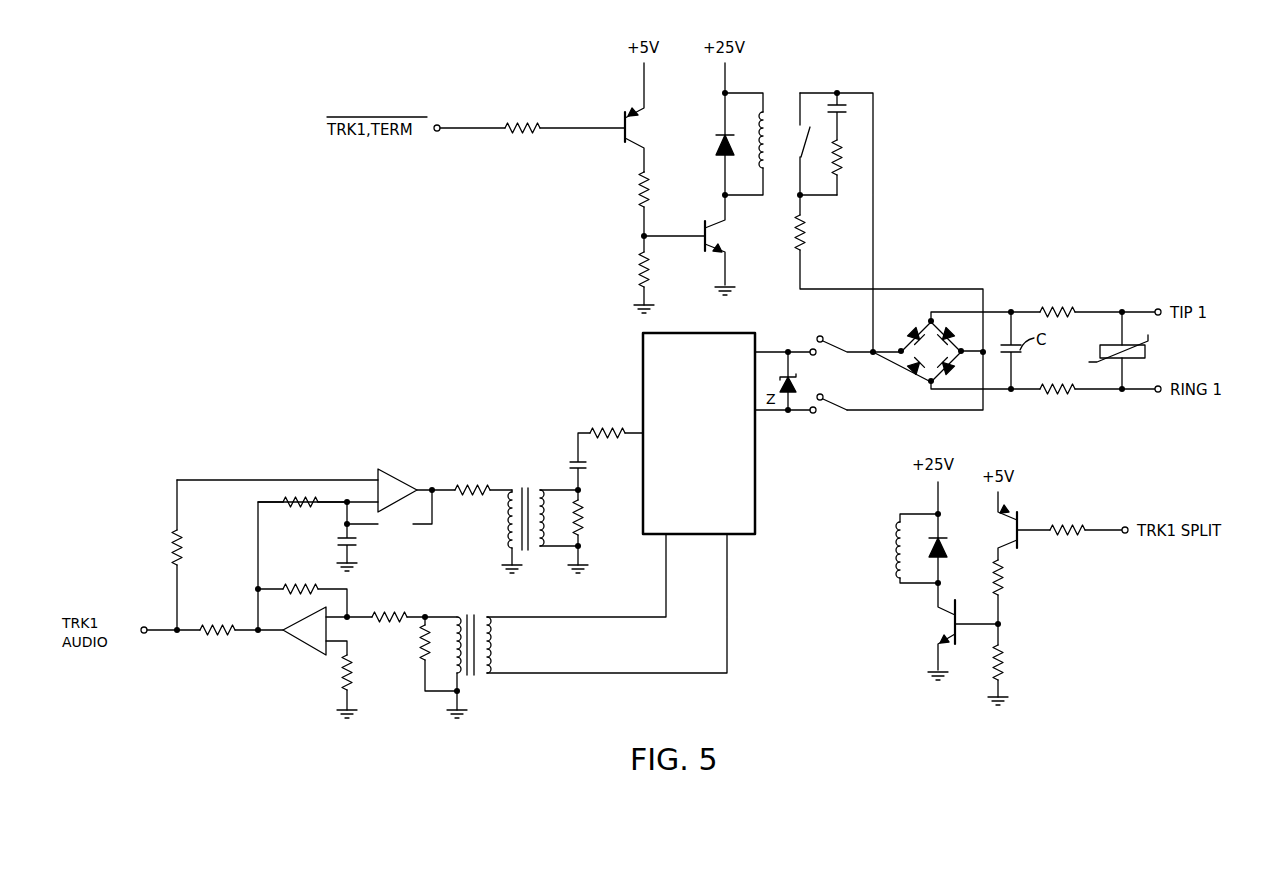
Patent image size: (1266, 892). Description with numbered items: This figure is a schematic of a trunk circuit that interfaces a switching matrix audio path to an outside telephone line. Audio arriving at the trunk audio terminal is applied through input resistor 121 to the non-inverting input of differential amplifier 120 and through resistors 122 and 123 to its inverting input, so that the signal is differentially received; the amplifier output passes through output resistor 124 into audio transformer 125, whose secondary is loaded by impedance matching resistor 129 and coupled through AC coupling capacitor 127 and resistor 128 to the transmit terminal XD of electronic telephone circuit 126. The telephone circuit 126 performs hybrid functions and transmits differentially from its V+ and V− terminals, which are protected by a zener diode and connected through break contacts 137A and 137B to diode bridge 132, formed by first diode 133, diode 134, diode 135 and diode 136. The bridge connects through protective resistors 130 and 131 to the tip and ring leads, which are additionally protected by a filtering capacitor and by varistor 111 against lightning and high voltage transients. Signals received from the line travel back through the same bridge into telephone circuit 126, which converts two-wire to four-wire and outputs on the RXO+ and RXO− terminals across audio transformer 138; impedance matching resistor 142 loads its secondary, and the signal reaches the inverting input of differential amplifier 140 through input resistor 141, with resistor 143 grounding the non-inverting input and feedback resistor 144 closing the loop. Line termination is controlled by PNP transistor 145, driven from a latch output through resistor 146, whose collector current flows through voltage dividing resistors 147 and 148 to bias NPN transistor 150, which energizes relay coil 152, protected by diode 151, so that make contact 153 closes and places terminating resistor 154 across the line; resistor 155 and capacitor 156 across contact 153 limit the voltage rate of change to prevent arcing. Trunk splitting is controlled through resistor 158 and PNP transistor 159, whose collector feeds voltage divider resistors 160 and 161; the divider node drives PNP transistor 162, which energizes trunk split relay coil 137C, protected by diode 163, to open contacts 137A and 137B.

The varistor 111 is at (1148, 356).
The differential amplifier 120 is at (402, 448).
The input resistor 121 is at (173, 548).
The resistor 122 is at (212, 635).
The resistor 123 is at (299, 508).
The output resistor 124 is at (470, 487).
The audio transformer 125 is at (527, 478).
The electronic telephone circuit 126 is at (643, 355).
The AC coupling capacitor 127 is at (585, 462).
The resistor 128 is at (606, 428).
The impedance matching resistor 129 is at (582, 520).
The protective resistor 130 is at (1057, 308).
The protective resistor 131 is at (1054, 397).
The diode bridge 132 is at (956, 350).
The first diode 133 is at (916, 334).
The diode 134 is at (916, 370).
The diode 135 is at (947, 368).
The diode 136 is at (948, 336).
The first break contact 137A is at (838, 344).
The break contact 137B is at (823, 398).
The trunk split relay coil 137C is at (896, 550).
The audio transformer 138 is at (473, 612).
The differential amplifier 140 is at (300, 650).
The input resistor 141 is at (386, 612).
The impedance matching resistor 142 is at (416, 650).
The resistor 143 is at (340, 680).
The feedback resistor 144 is at (309, 585).
The PNP transistor 145 is at (627, 112).
The resistor 146 is at (522, 122).
The voltage dividing resistor 147 is at (640, 192).
The voltage dividing resistor 148 is at (640, 272).
The NPN transistor 150 is at (700, 232).
The protective diode 151 is at (715, 143).
The relay coil 152 is at (786, 122).
The make contact 153 is at (794, 150).
The terminating resistor 154 is at (808, 240).
The resistor 155 is at (847, 175).
The capacitor 156 is at (849, 106).
The resistor 158 is at (1068, 526).
The PNP transistor 159 is at (1020, 520).
The voltage divider resistor 160 is at (1006, 586).
The voltage divider resistor 161 is at (1006, 660).
The PNP transistor 162 is at (962, 612).
The protective diode 163 is at (948, 546).